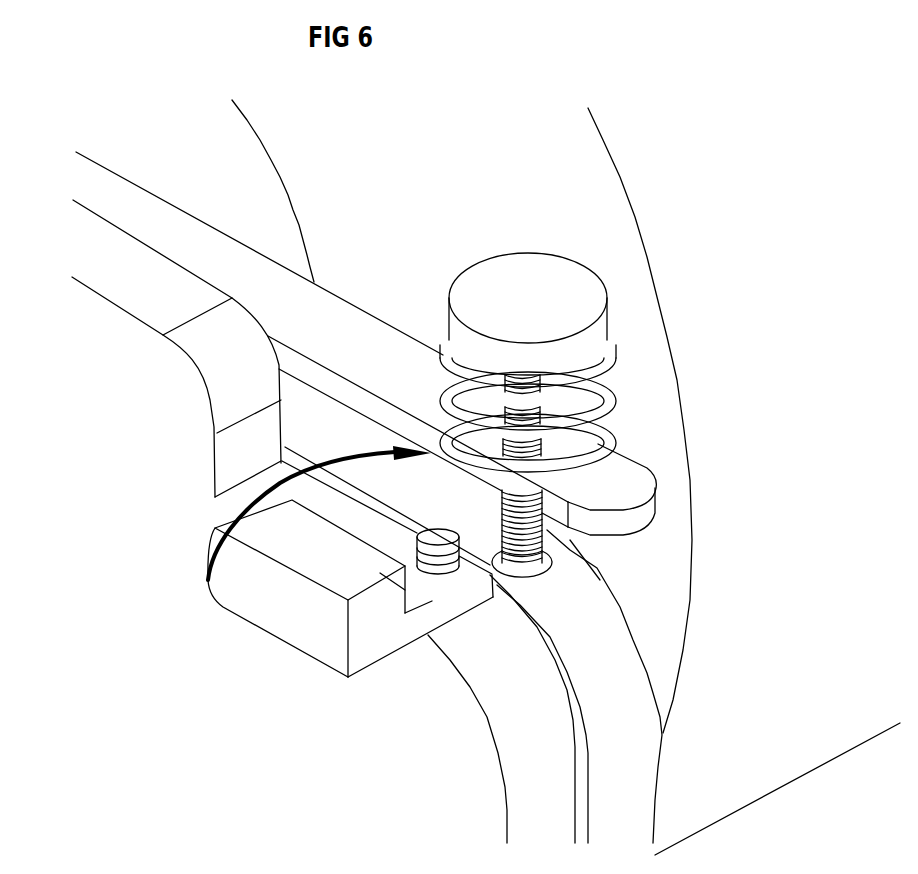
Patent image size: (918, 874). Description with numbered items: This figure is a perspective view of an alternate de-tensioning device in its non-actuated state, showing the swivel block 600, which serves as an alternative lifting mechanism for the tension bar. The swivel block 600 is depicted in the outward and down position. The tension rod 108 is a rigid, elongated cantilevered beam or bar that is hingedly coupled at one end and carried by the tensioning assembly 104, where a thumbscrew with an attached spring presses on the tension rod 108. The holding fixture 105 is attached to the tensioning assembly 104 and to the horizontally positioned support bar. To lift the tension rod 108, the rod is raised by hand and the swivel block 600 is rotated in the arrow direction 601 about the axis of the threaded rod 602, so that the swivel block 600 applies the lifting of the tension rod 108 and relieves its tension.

The tensioning assembly 104 is at (607, 683).
The holding fixture 105 is at (547, 730).
The tension rod 108 is at (628, 530).
The swivel block 600 is at (260, 620).
The arrow direction 601 is at (290, 500).
The threaded rod 602 is at (437, 543).